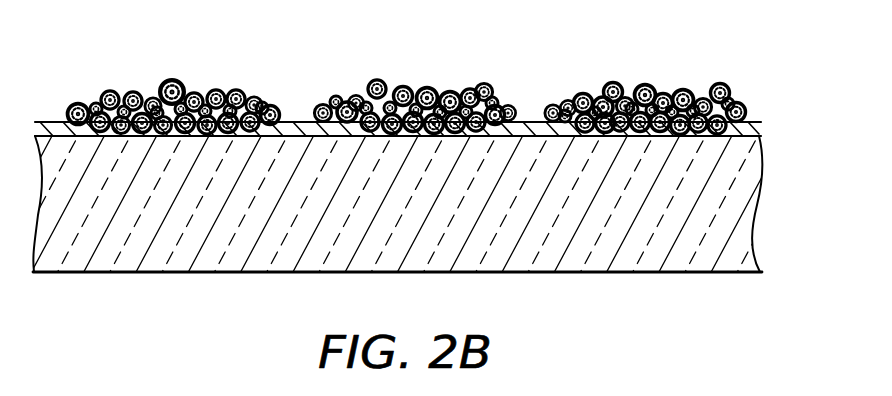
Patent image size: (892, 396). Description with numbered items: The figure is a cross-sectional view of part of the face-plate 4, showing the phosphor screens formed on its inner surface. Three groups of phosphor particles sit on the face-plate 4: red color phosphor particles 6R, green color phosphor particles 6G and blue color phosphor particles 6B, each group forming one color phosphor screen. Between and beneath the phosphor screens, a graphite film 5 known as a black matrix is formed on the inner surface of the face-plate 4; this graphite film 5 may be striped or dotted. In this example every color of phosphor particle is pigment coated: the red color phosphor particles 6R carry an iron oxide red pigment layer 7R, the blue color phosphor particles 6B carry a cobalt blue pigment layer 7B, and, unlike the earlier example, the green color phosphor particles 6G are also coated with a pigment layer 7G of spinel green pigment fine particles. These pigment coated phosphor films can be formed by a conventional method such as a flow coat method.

The face-plate 4 is at (745, 211).
The graphite film 5 is at (760, 123).
The red color phosphor particle 6R is at (187, 80).
The iron oxide red pigment layer 7R is at (174, 74).
The green color phosphor particle 6G is at (426, 90).
The spinel green pigment layer 7G is at (414, 73).
The blue color phosphor particle 6B is at (647, 84).
The cobalt blue pigment layer 7B is at (645, 73).